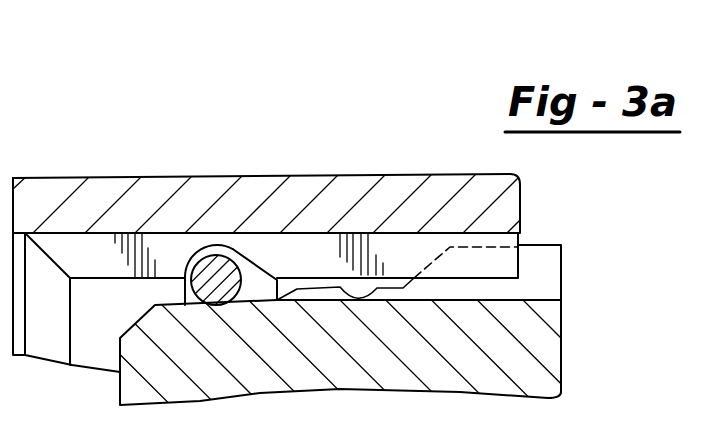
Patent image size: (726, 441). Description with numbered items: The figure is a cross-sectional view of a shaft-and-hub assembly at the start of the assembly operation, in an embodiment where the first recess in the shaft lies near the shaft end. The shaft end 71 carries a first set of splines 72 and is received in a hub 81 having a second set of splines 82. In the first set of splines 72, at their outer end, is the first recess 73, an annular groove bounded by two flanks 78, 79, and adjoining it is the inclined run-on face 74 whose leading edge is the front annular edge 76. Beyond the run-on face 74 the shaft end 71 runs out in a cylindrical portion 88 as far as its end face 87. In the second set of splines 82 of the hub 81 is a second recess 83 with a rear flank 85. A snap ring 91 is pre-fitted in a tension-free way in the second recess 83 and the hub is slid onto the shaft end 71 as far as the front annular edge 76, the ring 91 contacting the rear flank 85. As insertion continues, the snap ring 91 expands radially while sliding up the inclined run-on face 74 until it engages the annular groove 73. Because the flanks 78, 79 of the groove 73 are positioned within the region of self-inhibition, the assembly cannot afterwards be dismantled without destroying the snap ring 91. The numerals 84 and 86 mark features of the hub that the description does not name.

The shaft end 71 is at (533, 340).
The first set of splines 72 is at (542, 280).
The first recess 73 is at (363, 293).
The inclined run-on face 74 is at (282, 303).
The front annular edge 76 is at (236, 303).
The flank of the annular groove 78 is at (386, 291).
The flank of the annular groove 79 is at (331, 290).
The hub 81 is at (50, 200).
The second set of splines 82 is at (100, 248).
The second recess 83 is at (231, 250).
The knurled surface 84 is at (343, 231).
The rear flank of the second recess 85 is at (211, 273).
The seal body 86 is at (268, 268).
The end face 87 is at (119, 347).
The cylindrical portion 88 is at (175, 306).
The snap ring 91 is at (203, 265).